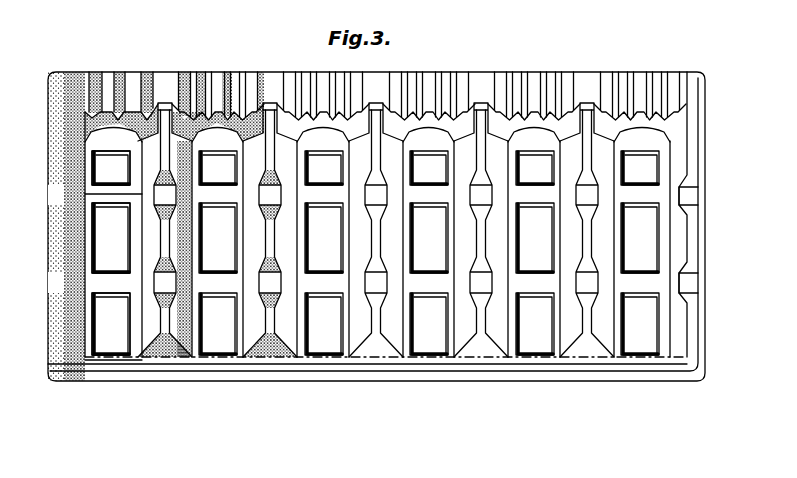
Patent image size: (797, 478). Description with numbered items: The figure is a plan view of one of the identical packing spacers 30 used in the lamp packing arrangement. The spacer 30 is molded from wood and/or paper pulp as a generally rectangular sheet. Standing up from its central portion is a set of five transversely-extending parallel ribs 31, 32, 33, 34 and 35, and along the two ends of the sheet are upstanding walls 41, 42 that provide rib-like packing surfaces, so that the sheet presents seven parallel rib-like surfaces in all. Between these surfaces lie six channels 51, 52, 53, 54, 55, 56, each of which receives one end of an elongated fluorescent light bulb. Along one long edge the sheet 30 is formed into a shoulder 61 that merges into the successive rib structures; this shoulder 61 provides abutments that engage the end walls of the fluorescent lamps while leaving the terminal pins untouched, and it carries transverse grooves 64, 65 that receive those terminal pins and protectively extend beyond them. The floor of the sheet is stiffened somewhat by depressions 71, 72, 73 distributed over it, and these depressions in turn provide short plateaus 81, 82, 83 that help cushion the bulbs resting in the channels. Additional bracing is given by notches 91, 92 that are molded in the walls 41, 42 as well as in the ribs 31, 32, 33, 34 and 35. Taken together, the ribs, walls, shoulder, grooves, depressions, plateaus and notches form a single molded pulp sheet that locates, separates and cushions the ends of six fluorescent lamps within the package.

The packing spacer 30 is at (630, 68).
The rib 31 is at (165, 338).
The rib 32 is at (269, 338).
The rib 33 is at (376, 338).
The rib 34 is at (481, 338).
The rib 35 is at (587, 338).
The upstanding wall 41 is at (57, 358).
The upstanding wall 42 is at (701, 366).
The channel 51 is at (122, 372).
The channel 52 is at (218, 372).
The channel 53 is at (322, 372).
The channel 54 is at (430, 372).
The channel 55 is at (535, 372).
The channel 56 is at (640, 372).
The shoulder 61 is at (67, 117).
The transverse groove 64 is at (100, 78).
The transverse groove 65 is at (124, 78).
The depression 71 is at (85, 262).
The depression 72 is at (103, 193).
The depression 73 is at (108, 362).
The plateau 81 is at (105, 163).
The plateau 82 is at (115, 238).
The plateau 83 is at (108, 328).
The notch 91 is at (692, 198).
The notch 92 is at (692, 283).